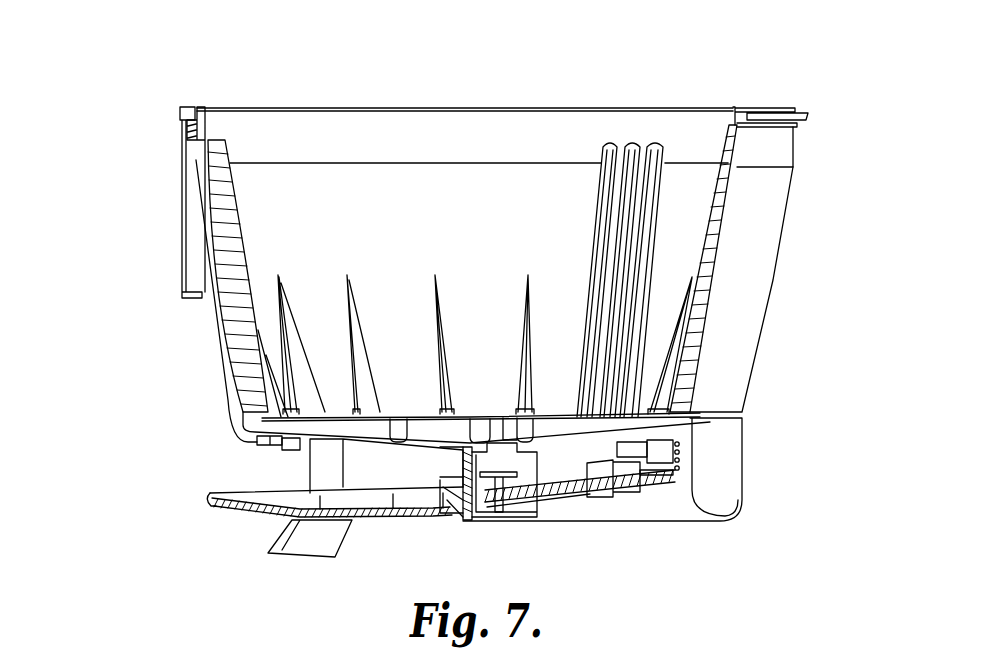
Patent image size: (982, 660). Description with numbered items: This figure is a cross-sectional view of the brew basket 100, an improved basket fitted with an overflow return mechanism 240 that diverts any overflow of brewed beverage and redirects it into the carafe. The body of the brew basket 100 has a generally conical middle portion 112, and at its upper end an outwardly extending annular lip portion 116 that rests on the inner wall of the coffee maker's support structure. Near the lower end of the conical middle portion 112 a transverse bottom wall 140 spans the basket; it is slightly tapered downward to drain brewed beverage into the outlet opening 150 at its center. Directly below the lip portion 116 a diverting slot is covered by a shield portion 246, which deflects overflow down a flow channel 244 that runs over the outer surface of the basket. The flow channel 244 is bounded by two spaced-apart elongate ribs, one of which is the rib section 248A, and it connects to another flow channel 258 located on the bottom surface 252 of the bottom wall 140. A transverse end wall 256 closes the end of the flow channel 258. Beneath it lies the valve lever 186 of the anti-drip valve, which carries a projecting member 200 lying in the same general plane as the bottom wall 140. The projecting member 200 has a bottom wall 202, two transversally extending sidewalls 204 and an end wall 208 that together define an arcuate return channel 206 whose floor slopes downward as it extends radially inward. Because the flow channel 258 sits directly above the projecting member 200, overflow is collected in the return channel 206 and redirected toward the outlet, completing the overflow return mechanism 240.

The brew basket 100 is at (150, 78).
The annular lip portion 116 is at (811, 111).
The shield portion 246 is at (193, 152).
The flow channel 244 is at (215, 305).
The elongate rib section 248A is at (218, 368).
The overflow return mechanism 240 is at (126, 418).
The bottom wall 140 is at (327, 429).
The flow channel 258 is at (298, 444).
The transverse end wall 256 is at (298, 456).
The sidewalls 204 is at (210, 489).
The end wall 208 is at (209, 499).
The return channel 206 is at (252, 512).
The bottom wall 202 is at (277, 510).
The bottom surface 252 is at (306, 521).
The projecting member 200 is at (367, 522).
The outlet opening 150 is at (463, 521).
The valve lever 186 is at (612, 495).
The conical middle portion 112 is at (760, 336).